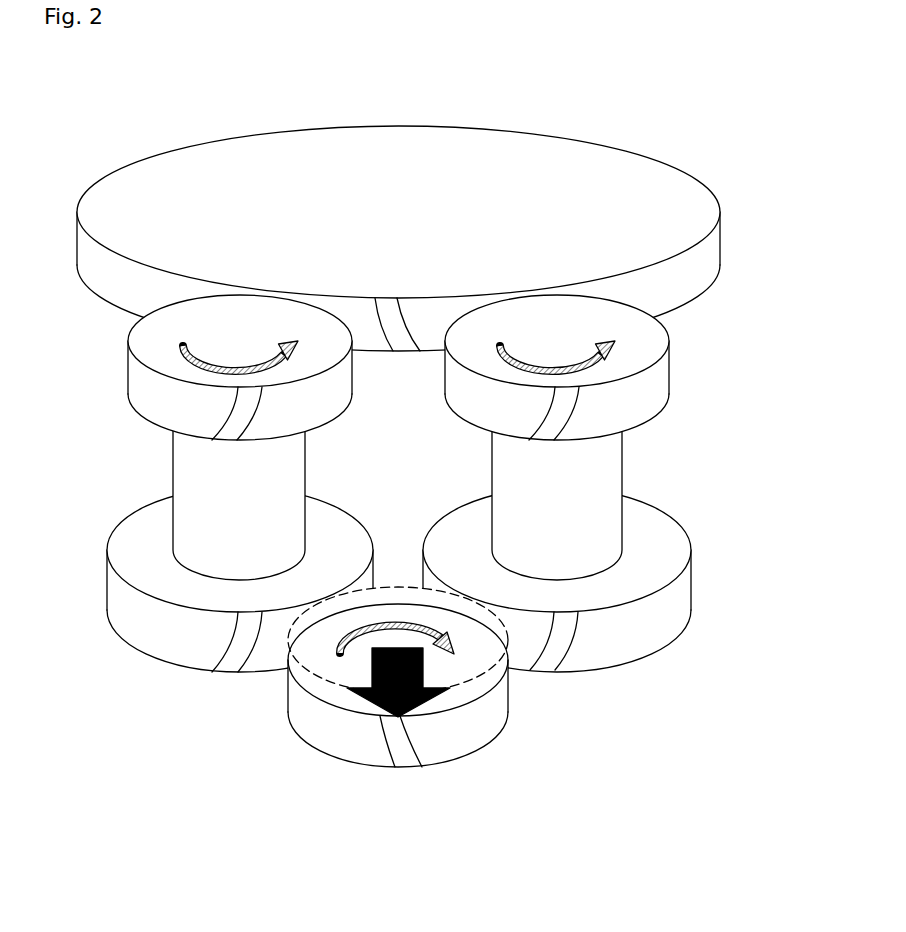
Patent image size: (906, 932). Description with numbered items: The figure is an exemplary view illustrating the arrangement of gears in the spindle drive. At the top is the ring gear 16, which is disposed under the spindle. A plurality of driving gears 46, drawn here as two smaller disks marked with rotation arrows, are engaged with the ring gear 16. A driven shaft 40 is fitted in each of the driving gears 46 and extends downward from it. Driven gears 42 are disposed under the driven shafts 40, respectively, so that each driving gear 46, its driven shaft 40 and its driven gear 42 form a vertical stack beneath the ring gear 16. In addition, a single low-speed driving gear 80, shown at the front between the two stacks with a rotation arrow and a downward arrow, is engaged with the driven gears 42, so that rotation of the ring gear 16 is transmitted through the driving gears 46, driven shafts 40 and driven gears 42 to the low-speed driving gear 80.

The ring gear 16 is at (477, 160).
The driving gear 46 is at (135, 383).
The driven shaft 40 is at (190, 473).
The driven gear 42 is at (132, 623).
The low-speed driving gear 80 is at (320, 723).